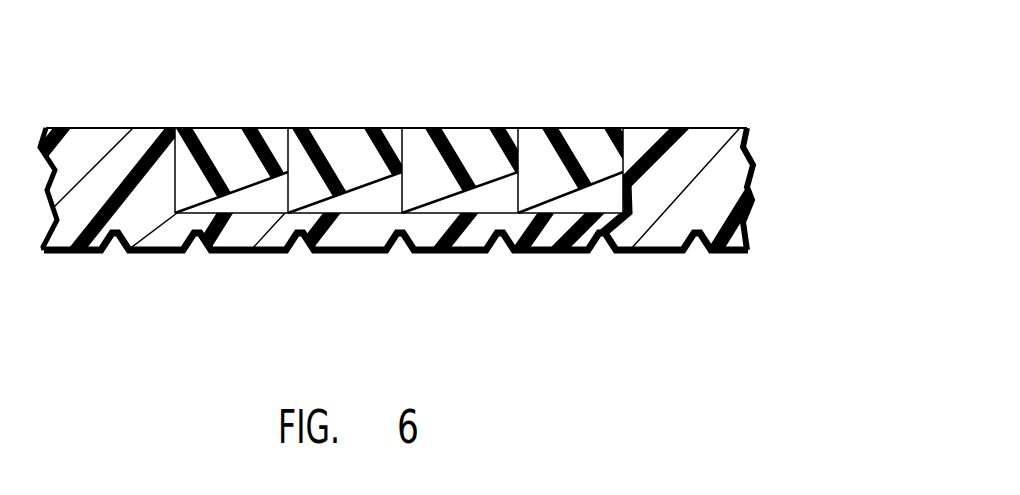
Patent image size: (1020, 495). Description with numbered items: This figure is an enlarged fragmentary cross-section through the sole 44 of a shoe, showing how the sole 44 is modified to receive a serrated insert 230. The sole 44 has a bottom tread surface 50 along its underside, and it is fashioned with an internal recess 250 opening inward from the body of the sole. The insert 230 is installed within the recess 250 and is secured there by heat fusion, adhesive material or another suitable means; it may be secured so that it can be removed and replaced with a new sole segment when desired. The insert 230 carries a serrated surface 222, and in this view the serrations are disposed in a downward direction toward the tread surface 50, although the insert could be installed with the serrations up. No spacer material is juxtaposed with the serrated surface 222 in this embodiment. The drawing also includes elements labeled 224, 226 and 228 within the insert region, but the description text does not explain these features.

The sole 44 is at (758, 153).
The bottom tread surface 50 is at (563, 252).
The insert 230 is at (317, 120).
The serrated surface 222 is at (447, 213).
The internal recess 250 is at (195, 128).
The divider wall 226 is at (285, 213).
The cell 224 is at (287, 128).
The wedge 228 is at (422, 208).